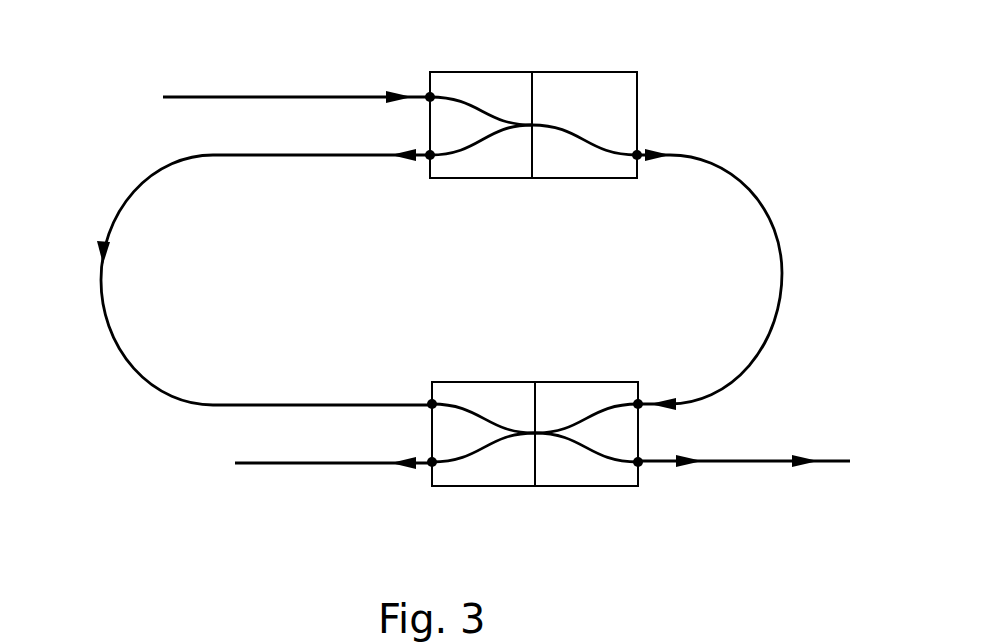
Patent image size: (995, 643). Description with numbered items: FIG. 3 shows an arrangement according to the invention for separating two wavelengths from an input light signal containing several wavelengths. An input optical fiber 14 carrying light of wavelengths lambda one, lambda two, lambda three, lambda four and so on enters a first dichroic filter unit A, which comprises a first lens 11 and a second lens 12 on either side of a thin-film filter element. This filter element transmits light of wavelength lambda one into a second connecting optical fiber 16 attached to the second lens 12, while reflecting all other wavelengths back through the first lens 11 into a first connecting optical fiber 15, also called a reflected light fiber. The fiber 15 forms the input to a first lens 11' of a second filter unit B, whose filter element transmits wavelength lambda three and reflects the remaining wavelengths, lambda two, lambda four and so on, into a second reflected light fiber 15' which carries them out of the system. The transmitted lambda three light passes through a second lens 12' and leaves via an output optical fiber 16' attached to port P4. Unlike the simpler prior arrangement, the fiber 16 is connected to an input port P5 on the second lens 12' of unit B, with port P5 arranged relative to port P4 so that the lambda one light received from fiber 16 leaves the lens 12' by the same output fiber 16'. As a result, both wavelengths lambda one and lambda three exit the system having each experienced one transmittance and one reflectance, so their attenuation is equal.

The dichroic filter unit A is at (554, 54).
The second filter unit B is at (556, 362).
The first lens 11 is at (478, 165).
The second lens 12 is at (606, 157).
The first lens of second filter unit 11' is at (478, 473).
The second lens of second filter unit 12' is at (599, 467).
The input optical fiber 14 is at (192, 97).
The first connecting optical fiber 15 is at (228, 279).
The second reflected light fiber 15' is at (303, 481).
The second connecting optical fiber 16 is at (744, 261).
The output optical fiber 16' is at (744, 477).
The port P4 is at (642, 466).
The input port P5 is at (639, 402).